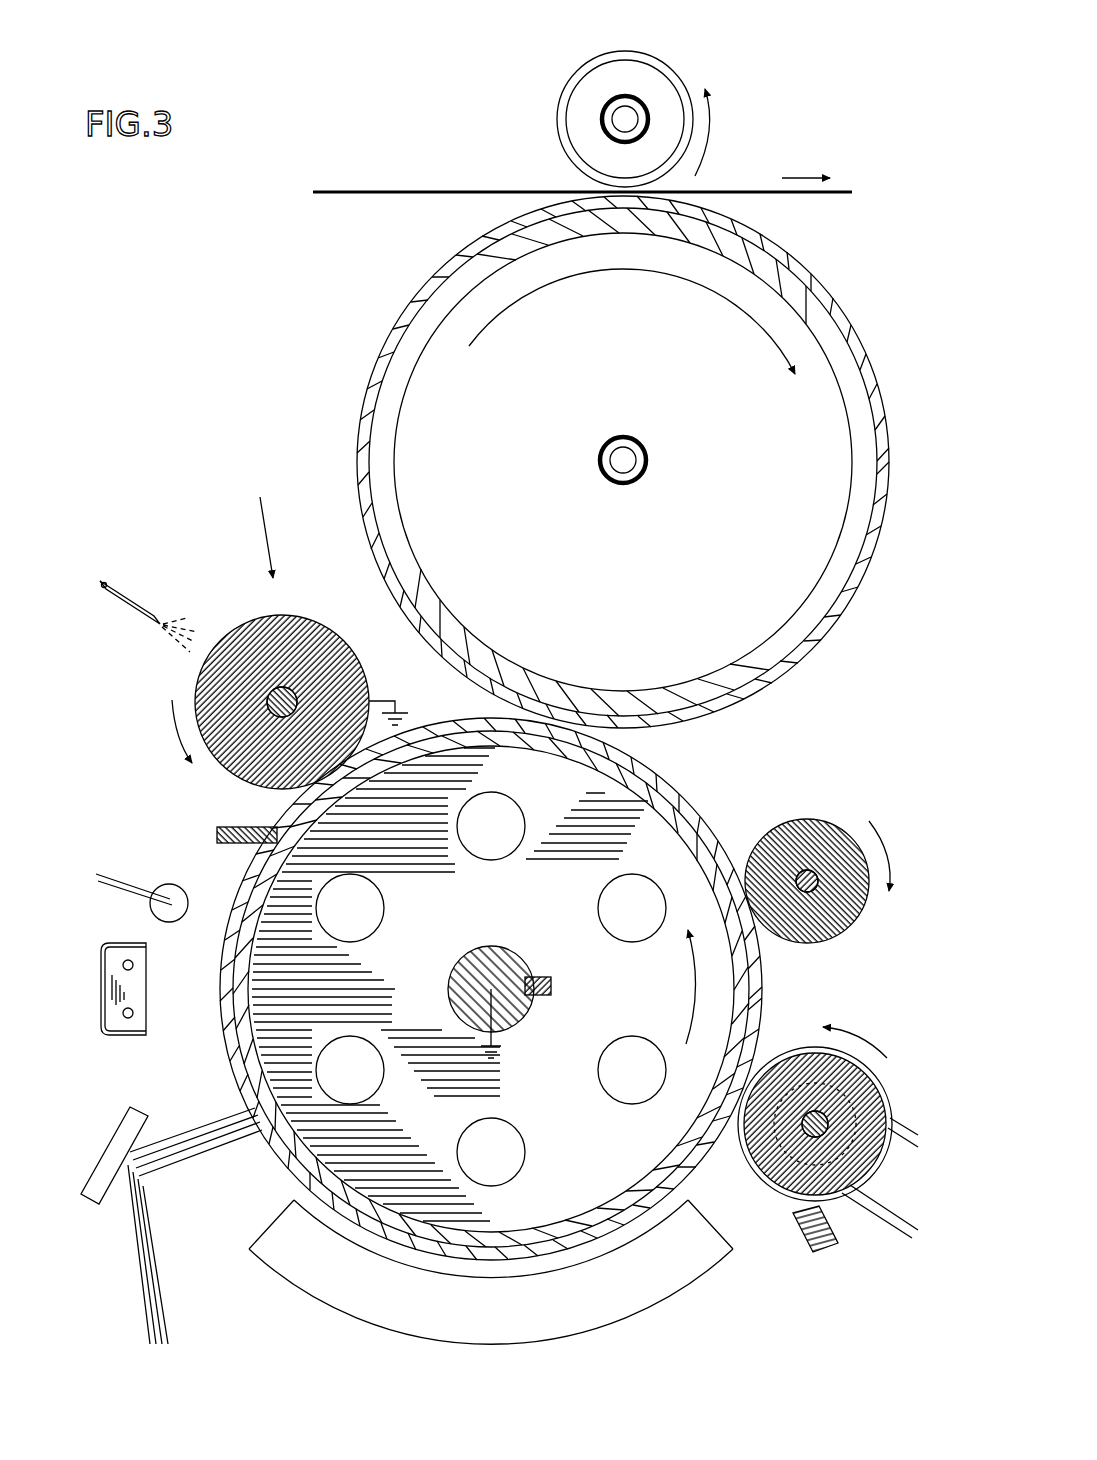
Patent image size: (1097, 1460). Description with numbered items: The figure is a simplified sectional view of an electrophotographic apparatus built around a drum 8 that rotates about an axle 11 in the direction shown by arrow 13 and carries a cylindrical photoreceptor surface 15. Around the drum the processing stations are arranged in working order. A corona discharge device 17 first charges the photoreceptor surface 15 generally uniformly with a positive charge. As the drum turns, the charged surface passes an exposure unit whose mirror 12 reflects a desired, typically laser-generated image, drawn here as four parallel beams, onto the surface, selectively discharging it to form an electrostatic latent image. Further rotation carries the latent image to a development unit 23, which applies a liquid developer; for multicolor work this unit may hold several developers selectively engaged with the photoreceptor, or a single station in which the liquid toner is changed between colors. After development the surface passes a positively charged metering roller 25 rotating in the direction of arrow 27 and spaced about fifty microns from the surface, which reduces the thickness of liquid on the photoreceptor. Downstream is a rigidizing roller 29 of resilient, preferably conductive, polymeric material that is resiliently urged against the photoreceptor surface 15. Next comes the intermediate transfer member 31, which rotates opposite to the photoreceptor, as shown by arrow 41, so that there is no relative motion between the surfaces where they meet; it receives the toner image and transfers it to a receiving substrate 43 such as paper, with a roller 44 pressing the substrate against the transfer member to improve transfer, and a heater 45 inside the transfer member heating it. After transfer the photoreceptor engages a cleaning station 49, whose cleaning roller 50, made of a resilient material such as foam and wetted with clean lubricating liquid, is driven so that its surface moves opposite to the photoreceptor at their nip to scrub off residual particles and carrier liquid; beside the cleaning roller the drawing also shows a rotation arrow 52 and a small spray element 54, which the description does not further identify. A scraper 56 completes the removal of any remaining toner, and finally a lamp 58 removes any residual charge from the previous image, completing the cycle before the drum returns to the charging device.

The drum 8 is at (674, 814).
The axle 11 is at (523, 963).
The mirror 12 is at (98, 1160).
The arrow 13 is at (693, 978).
The photoreceptor surface 15 is at (712, 834).
The corona discharge device 17 is at (148, 998).
The development unit 23 is at (286, 1255).
The roller 25 is at (797, 1042).
The arrow 27 is at (848, 1027).
The rigidizing roller 29 is at (832, 823).
The intermediate transfer member 31 is at (854, 588).
The arrow 41 is at (687, 275).
The receiving substrate 43 is at (718, 190).
The roller 44 is at (658, 58).
The heater 45 is at (648, 472).
The cleaning station 49 is at (256, 522).
The cleaning roller 50 is at (300, 617).
The cleaning roller rotation arrow 52 is at (173, 733).
The spray nozzle 54 is at (130, 590).
The scraper 56 is at (247, 825).
The lamp 58 is at (132, 880).